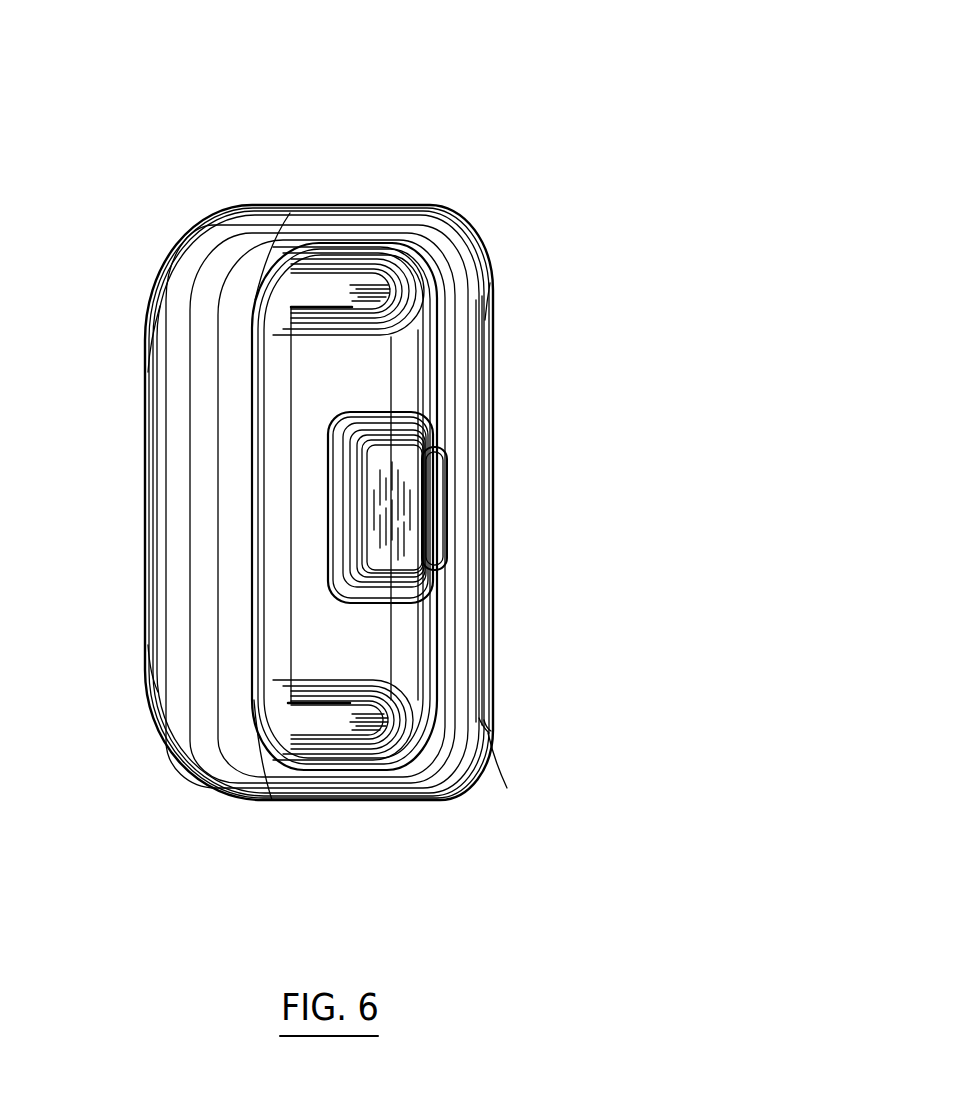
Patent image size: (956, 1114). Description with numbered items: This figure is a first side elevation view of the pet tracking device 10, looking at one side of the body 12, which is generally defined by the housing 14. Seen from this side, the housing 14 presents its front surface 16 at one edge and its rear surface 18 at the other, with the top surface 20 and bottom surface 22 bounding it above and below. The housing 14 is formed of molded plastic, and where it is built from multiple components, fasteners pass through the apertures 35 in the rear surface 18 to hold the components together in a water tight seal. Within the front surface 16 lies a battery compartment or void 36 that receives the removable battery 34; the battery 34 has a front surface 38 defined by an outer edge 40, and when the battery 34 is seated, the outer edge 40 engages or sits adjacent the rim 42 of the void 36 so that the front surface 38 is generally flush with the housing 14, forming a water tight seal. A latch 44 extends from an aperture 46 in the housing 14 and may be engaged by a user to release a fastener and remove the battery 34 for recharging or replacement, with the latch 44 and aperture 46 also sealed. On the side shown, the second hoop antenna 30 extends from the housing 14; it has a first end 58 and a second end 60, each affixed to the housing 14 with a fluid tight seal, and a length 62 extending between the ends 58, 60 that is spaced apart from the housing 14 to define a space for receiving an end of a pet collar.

The pet tracking device 10 is at (540, 95).
The body 12 is at (424, 830).
The housing 14 is at (195, 748).
The front surface 16 is at (493, 270).
The rear surface 18 is at (145, 523).
The top surface 20 is at (325, 807).
The bottom surface 22 is at (350, 207).
The second hoop antenna 30 is at (273, 313).
The removable battery 34 is at (482, 603).
The apertures 35 is at (148, 342).
The void 36 is at (522, 746).
The front surface 38 is at (494, 482).
The outer edge 40 is at (488, 730).
The rim 42 is at (508, 780).
The latch 44 is at (410, 468).
The aperture 46 is at (380, 410).
The first end 58 is at (363, 719).
The second end 60 is at (353, 297).
The length 62 is at (276, 605).